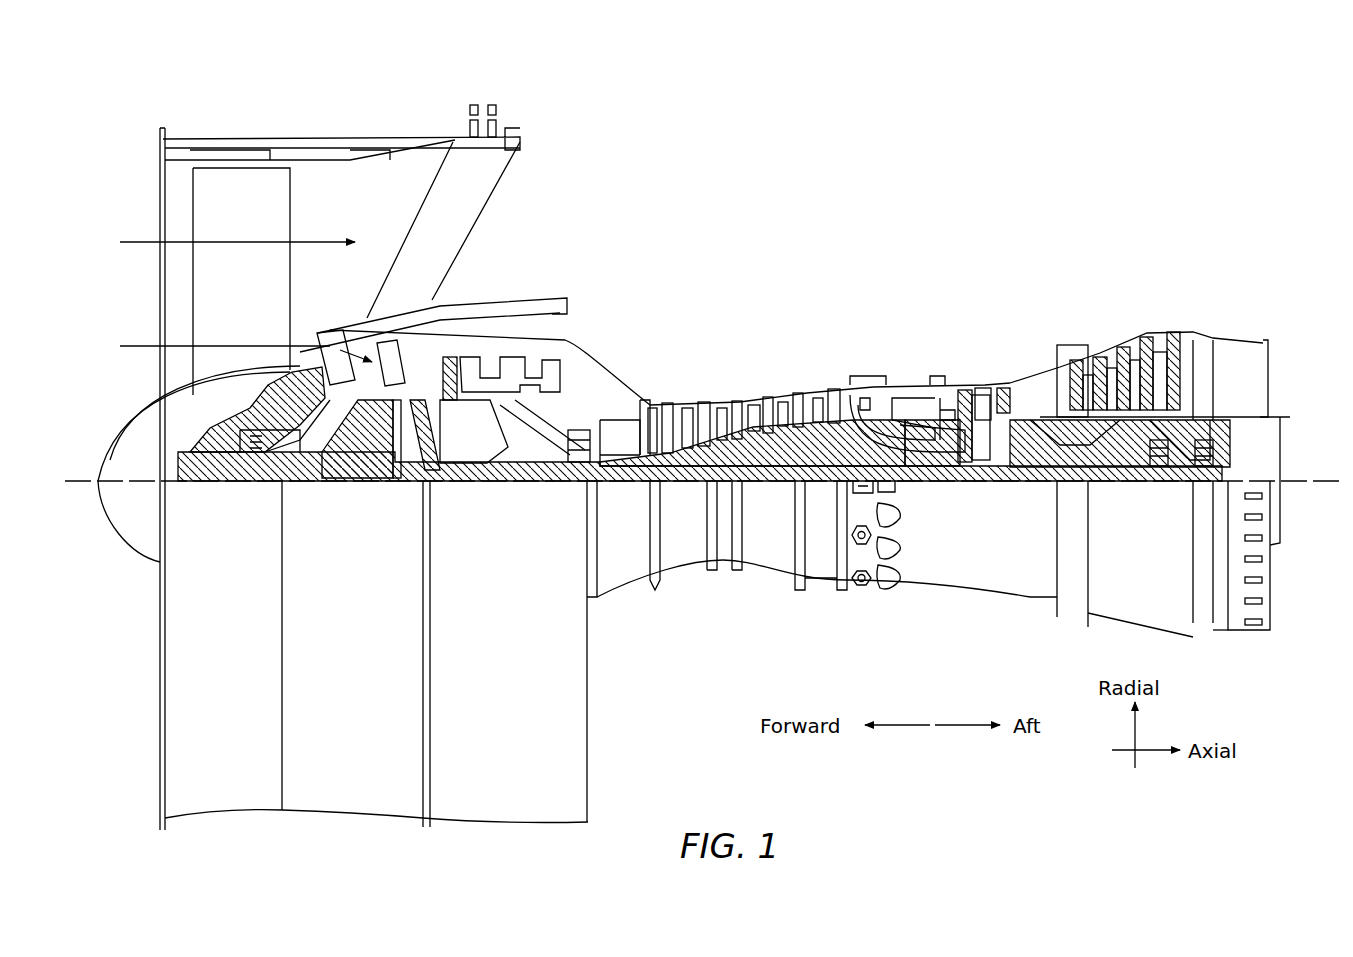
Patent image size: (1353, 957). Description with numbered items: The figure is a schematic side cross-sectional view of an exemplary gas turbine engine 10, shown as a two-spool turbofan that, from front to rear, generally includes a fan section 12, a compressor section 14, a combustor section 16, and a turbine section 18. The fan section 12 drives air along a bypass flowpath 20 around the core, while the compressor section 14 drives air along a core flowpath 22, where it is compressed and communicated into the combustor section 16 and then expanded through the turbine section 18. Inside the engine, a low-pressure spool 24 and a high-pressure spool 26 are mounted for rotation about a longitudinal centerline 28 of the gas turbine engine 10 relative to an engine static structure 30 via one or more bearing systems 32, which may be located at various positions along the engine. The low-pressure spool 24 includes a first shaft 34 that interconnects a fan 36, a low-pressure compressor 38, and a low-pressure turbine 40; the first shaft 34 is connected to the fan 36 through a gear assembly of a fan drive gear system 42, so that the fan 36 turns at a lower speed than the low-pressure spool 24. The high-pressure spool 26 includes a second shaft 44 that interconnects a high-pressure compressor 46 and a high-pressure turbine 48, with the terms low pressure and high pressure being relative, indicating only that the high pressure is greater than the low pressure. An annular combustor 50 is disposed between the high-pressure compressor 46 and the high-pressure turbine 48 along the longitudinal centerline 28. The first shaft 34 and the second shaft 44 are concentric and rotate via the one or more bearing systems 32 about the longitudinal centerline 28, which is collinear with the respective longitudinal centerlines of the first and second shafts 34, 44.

The gas turbine engine 10 is at (1022, 190).
The fan section 12 is at (420, 118).
The compressor section 14 is at (855, 262).
The combustor section 16 is at (965, 262).
The turbine section 18 is at (1200, 262).
The bypass flowpath 20 is at (128, 240).
The core flowpath 22 is at (128, 344).
The low-pressure spool 24 is at (772, 484).
The high-pressure spool 26 is at (760, 400).
The longitudinal centerline 28 is at (1303, 470).
The engine static structure 30 is at (820, 584).
The bearing systems 32 is at (1048, 450).
The first shaft 34 is at (607, 492).
The fan 36 is at (244, 286).
The low-pressure compressor 38 is at (515, 368).
The low-pressure turbine 40 is at (1135, 340).
The fan drive gear system 42 is at (378, 490).
The second shaft 44 is at (958, 470).
The high-pressure compressor 46 is at (737, 403).
The high-pressure turbine 48 is at (985, 385).
The annular combustor 50 is at (905, 405).